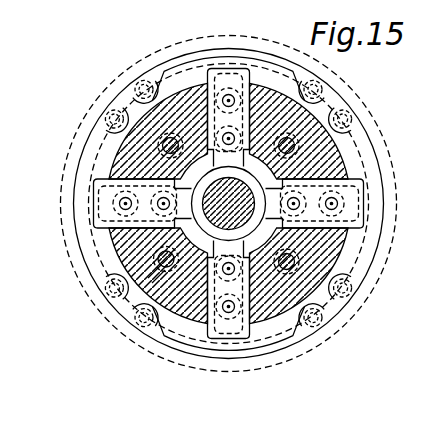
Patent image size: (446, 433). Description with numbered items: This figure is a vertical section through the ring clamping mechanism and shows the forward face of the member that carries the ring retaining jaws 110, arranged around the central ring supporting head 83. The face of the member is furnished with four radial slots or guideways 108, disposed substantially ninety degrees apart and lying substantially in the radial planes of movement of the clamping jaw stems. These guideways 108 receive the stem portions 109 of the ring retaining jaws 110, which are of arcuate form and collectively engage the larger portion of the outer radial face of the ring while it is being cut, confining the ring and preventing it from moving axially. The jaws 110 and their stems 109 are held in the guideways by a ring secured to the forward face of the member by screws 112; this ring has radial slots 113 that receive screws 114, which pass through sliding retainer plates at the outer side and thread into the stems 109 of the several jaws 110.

The ring retaining jaw 110 is at (212, 57).
The radial slot 113 is at (246, 70).
The ring supporting head 83 is at (327, 108).
The stem portion 109 is at (135, 105).
The radial slot or guideway 108 is at (108, 162).
The screw 112 is at (126, 300).
The screw 114 is at (228, 312).